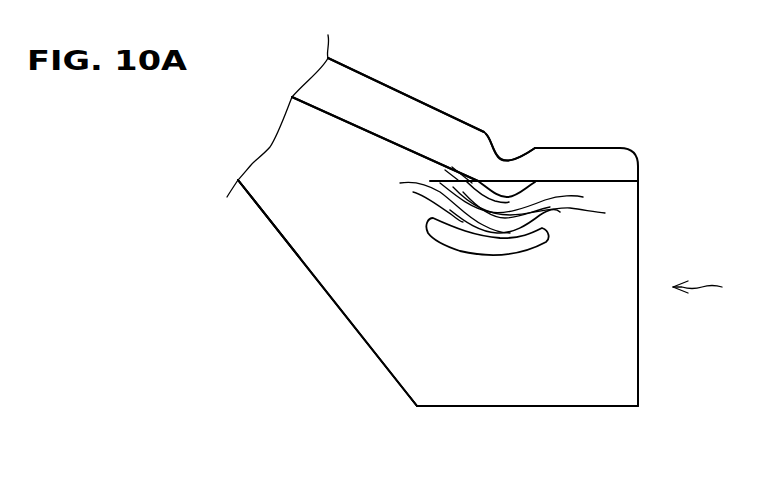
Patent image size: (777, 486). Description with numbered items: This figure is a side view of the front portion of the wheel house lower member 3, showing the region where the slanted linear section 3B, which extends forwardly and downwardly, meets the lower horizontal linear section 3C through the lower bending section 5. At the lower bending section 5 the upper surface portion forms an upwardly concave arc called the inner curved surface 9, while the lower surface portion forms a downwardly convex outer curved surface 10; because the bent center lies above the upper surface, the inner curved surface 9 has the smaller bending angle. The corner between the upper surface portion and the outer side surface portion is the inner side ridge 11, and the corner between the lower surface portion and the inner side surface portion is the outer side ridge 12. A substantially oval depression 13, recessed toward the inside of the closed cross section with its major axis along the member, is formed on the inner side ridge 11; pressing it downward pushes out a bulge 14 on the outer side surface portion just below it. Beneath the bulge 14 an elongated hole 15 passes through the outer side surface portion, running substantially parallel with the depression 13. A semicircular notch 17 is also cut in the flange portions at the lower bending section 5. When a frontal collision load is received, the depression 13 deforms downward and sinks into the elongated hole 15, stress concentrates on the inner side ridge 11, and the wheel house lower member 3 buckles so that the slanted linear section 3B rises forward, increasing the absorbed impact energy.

The wheel house lower member 3 is at (277, 247).
The slanted linear section 3B is at (245, 212).
The lower horizontal linear section 3C is at (528, 406).
The lower bending section 5 is at (482, 93).
The inner curved surface 9 is at (444, 166).
The outer curved surface 10 is at (415, 407).
The inner side ridge 11 is at (375, 133).
The outer side ridge 12 is at (325, 292).
The depression 13 is at (527, 180).
The bulge 14 is at (402, 183).
The elongated hole 15 is at (520, 243).
The notch 17 is at (500, 145).